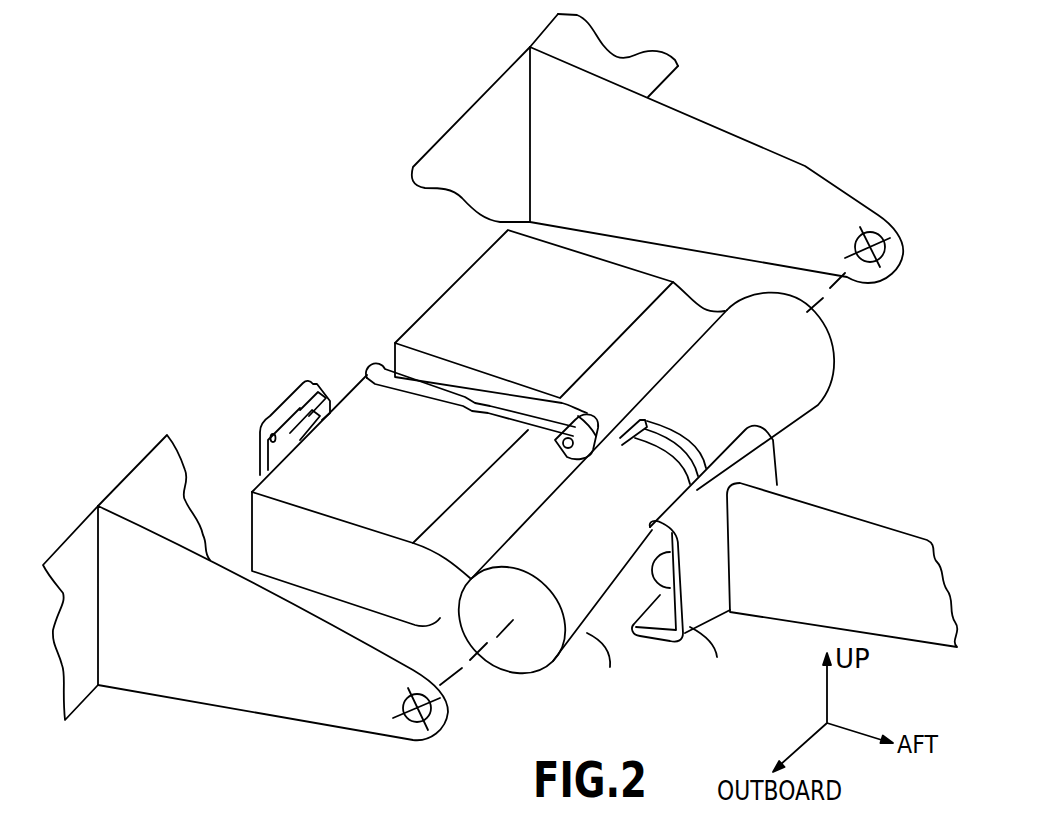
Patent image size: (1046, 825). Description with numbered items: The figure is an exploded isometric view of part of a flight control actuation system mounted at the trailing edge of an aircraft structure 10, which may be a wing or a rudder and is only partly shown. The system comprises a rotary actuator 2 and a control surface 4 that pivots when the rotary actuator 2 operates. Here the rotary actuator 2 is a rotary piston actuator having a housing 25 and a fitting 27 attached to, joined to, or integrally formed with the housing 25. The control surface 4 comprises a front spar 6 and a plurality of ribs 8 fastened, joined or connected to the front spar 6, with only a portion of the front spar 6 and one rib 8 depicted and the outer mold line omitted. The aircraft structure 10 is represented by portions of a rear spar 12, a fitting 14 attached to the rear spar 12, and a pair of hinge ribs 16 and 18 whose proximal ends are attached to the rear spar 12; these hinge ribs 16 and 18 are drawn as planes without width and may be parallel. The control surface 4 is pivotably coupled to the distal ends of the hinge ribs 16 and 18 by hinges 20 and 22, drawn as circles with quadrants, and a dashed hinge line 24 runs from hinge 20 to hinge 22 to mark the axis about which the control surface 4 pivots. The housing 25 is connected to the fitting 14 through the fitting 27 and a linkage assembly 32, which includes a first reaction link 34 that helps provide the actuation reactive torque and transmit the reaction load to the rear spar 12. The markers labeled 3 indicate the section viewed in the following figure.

The rotary actuator 2 is at (595, 243).
The section line 3- 3 is at (145, 372).
The control surface 4 is at (875, 482).
The front spar 6 is at (693, 625).
The rib 8 is at (802, 622).
The aircraft structure 10 is at (377, 120).
The rear spar 12 is at (482, 118).
The fitting 14 is at (293, 398).
The hinge rib 16 is at (197, 703).
The hinge rib 18 is at (673, 105).
The hinge 20 is at (402, 725).
The hinge 22 is at (883, 233).
The hinge line 24 is at (453, 675).
The housing 25 is at (590, 633).
The fitting 27 is at (597, 413).
The linkage assembly 32 is at (216, 819).
The first reaction link 34 is at (457, 393).